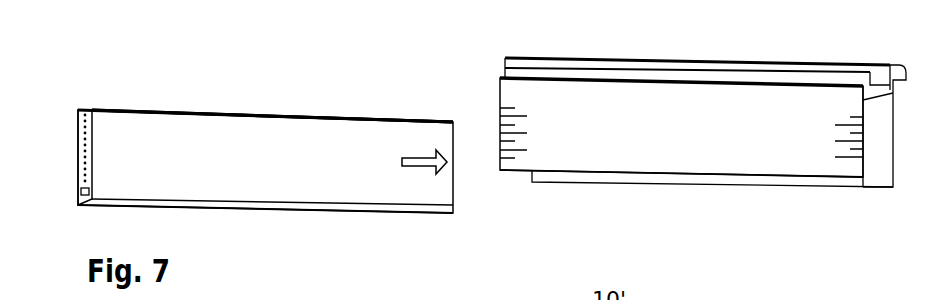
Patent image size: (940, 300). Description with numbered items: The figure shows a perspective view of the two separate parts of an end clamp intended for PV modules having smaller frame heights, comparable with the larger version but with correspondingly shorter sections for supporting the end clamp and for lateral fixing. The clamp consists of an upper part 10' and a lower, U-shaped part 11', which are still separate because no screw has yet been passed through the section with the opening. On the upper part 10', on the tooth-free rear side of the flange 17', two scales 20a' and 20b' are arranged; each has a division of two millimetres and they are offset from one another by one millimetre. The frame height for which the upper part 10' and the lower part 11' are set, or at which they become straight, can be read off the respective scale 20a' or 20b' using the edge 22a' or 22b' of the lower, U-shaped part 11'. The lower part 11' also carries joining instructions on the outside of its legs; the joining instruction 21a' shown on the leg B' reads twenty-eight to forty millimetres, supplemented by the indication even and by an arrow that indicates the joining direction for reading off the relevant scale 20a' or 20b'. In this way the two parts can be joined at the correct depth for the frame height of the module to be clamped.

The upper part 10' is at (705, 93).
The lower, U-shaped part 11' is at (265, 188).
The flange 17' is at (681, 160).
The scale 20a' is at (569, 133).
The scale 20b' is at (795, 137).
The joining instruction 21a' is at (340, 160).
The edge 22a' is at (272, 83).
The edge 22b' is at (109, 133).
The leg B' is at (272, 93).